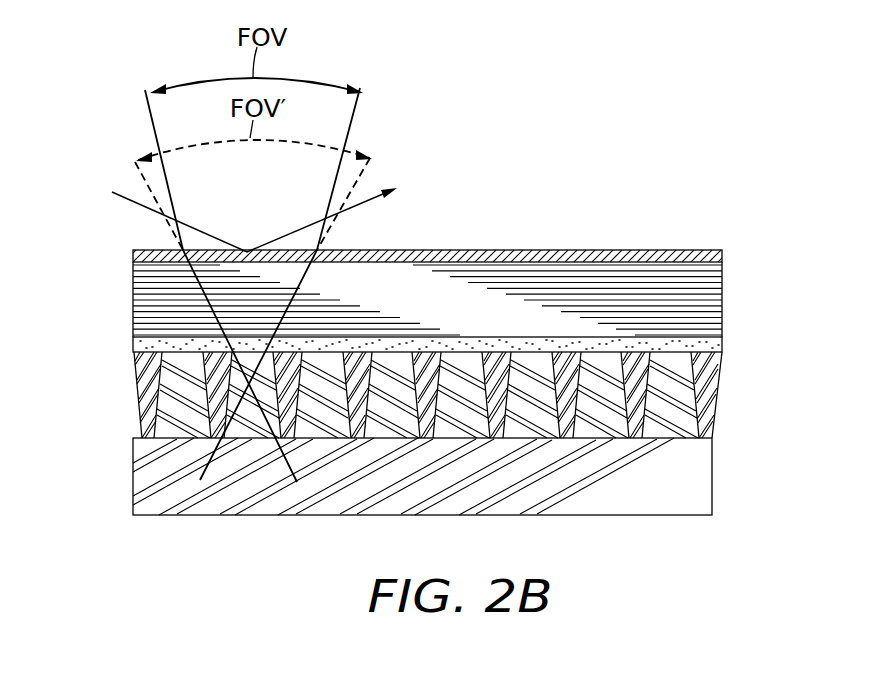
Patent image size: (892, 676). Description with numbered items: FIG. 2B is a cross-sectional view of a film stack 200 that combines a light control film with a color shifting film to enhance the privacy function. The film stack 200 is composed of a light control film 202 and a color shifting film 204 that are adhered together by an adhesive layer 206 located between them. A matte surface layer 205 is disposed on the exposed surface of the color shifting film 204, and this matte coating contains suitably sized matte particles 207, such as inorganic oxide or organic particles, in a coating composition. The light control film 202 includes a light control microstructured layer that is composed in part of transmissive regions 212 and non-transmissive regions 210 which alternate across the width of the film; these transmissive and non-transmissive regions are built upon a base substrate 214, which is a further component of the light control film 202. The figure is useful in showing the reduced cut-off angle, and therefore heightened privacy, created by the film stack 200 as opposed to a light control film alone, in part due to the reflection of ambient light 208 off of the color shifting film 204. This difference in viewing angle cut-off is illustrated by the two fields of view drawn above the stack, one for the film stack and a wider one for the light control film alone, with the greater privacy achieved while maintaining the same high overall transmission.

The film stack 200 is at (654, 109).
The light control film 202 is at (728, 350).
The color shifting film 204 is at (728, 260).
The matte surface layer 205 is at (137, 251).
The adhesive layer 206 is at (137, 343).
The matte particles 207 is at (567, 252).
The ambient light 208 is at (112, 192).
The non-transmissive regions 210 is at (642, 437).
The transmissive regions 212 is at (527, 425).
The base substrate 214 is at (145, 453).